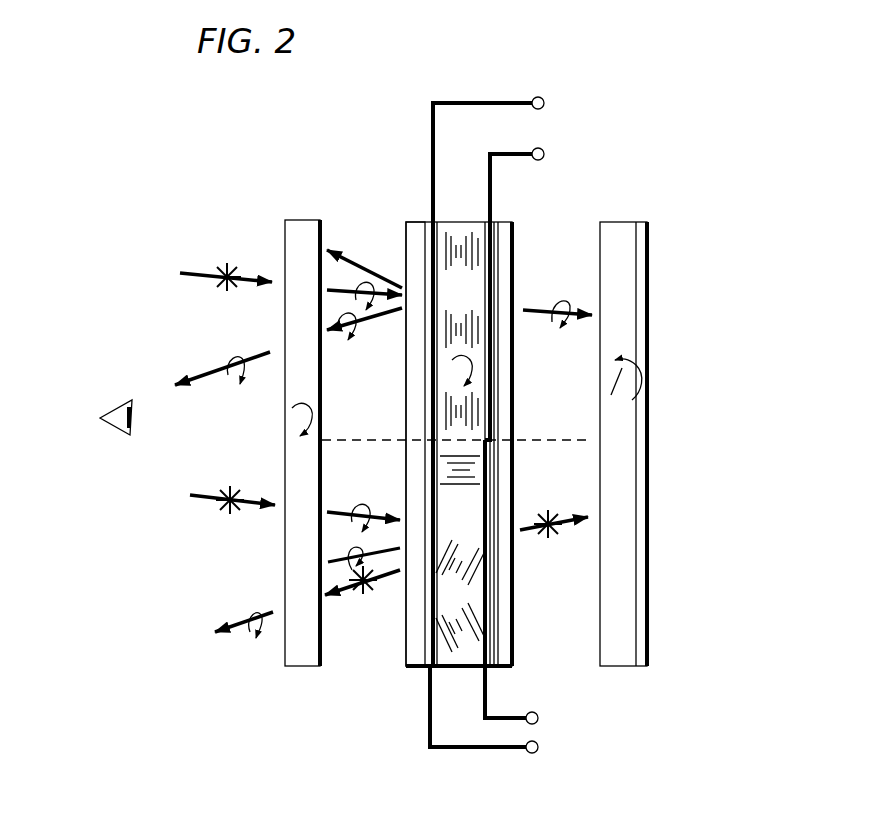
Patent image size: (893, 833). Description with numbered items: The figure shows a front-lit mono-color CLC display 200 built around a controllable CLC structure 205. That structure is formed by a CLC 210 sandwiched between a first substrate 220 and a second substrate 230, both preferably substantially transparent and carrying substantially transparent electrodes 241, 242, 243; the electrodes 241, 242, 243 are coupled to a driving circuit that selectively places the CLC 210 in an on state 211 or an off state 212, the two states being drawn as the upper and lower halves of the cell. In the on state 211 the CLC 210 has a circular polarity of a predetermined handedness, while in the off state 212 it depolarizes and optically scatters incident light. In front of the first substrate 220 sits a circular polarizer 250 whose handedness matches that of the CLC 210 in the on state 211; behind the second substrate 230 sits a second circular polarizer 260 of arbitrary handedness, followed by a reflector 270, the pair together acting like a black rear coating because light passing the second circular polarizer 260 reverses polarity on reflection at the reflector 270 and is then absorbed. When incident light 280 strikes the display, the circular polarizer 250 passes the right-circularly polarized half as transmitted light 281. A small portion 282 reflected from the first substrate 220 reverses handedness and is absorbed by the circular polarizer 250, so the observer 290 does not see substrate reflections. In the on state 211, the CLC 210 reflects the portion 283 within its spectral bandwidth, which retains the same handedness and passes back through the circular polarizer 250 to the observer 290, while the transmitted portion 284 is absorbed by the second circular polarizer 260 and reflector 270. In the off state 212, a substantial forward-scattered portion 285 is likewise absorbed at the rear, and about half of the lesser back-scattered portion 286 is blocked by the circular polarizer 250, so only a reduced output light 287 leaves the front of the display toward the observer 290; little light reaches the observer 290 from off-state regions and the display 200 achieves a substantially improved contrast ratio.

The front-lit mono-color CLC display 200 is at (640, 86).
The controllable CLC structure 205 is at (546, 763).
The CLC 210 is at (457, 221).
The on state 211 is at (477, 299).
The off state 212 is at (475, 531).
The first substrate 220 is at (412, 219).
The second substrate 230 is at (514, 222).
The electrode 241 is at (430, 220).
The electrode 242 is at (497, 221).
The electrode 243 is at (490, 670).
The circular polarizer 250 is at (303, 219).
The second circular polarizer 260 is at (620, 221).
The reflector 270 is at (645, 221).
The incident light 280 is at (195, 272).
The transmitted light 281 is at (345, 290).
The reflected light 282 is at (360, 562).
The reflected light 283 is at (368, 326).
The transmitted light 284 is at (532, 312).
The forward-scattered light 285 is at (524, 533).
The back-scattered light 286 is at (384, 588).
The output light toward viewer 287 is at (245, 616).
The observer 290 is at (110, 426).